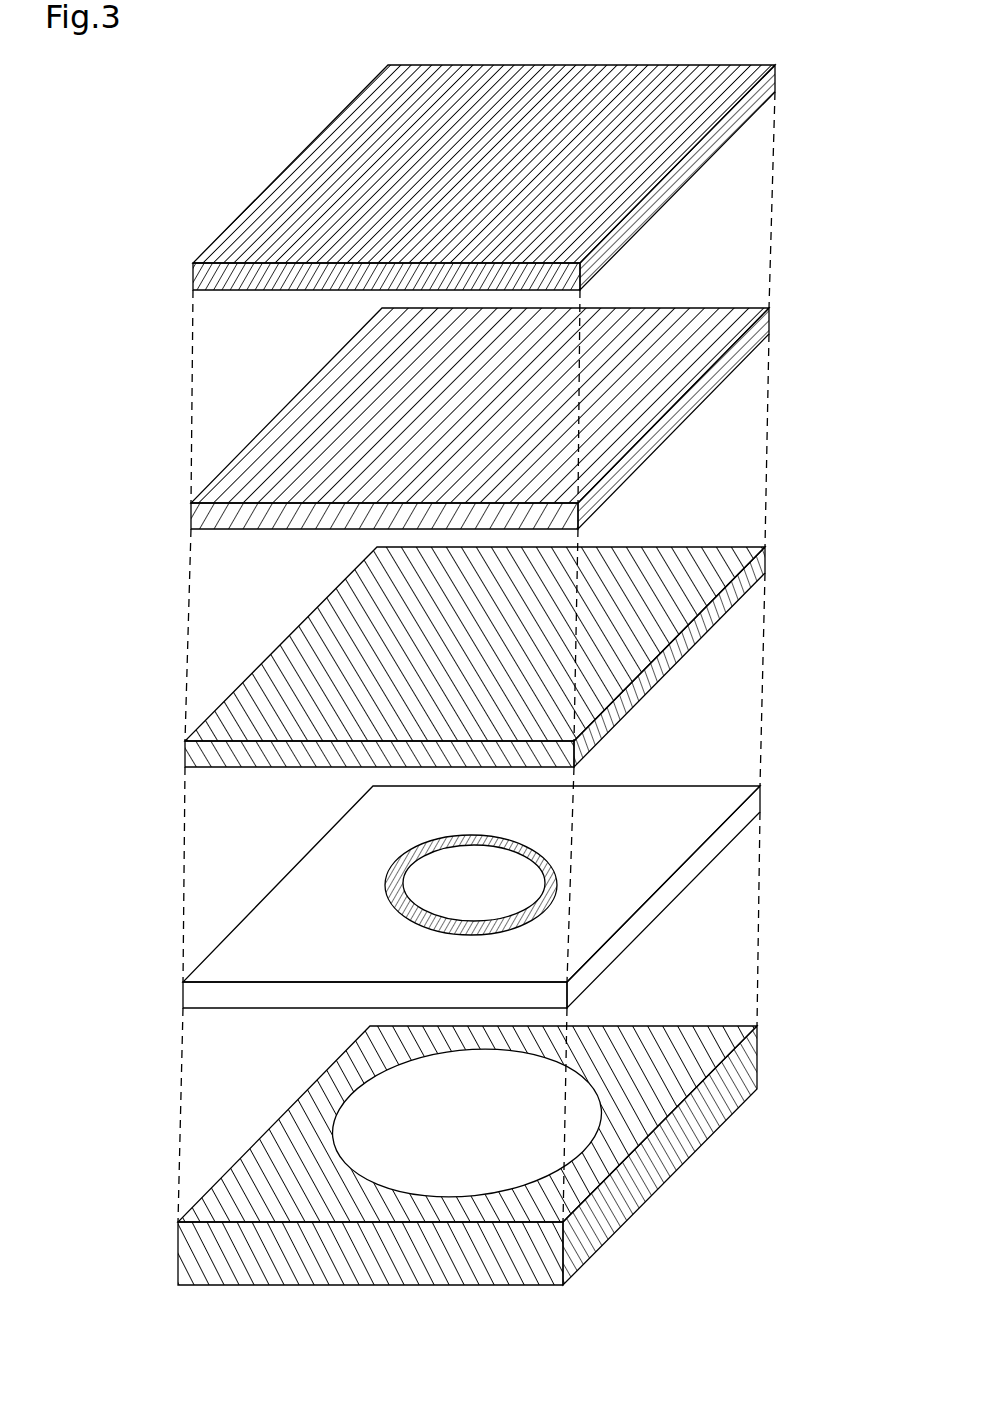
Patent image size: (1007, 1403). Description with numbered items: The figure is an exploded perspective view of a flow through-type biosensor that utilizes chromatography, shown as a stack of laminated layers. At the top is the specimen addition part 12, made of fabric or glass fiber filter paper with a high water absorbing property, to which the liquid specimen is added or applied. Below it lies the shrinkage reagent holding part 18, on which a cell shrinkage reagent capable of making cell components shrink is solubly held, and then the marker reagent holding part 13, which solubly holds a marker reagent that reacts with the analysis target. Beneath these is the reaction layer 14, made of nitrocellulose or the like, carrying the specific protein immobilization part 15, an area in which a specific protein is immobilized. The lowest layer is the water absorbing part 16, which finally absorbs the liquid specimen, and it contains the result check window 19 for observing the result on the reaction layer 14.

The specimen addition part 12 is at (717, 70).
The shrinkage reagent holding part 18 is at (715, 325).
The marker reagent holding part 13 is at (718, 555).
The reaction layer 14 is at (707, 797).
The specific protein immobilization part 15 is at (543, 848).
The water absorbing part 16 is at (705, 1040).
The result check window 19 is at (533, 1097).